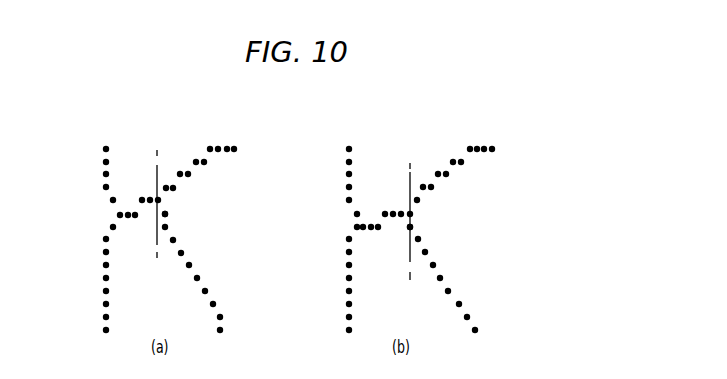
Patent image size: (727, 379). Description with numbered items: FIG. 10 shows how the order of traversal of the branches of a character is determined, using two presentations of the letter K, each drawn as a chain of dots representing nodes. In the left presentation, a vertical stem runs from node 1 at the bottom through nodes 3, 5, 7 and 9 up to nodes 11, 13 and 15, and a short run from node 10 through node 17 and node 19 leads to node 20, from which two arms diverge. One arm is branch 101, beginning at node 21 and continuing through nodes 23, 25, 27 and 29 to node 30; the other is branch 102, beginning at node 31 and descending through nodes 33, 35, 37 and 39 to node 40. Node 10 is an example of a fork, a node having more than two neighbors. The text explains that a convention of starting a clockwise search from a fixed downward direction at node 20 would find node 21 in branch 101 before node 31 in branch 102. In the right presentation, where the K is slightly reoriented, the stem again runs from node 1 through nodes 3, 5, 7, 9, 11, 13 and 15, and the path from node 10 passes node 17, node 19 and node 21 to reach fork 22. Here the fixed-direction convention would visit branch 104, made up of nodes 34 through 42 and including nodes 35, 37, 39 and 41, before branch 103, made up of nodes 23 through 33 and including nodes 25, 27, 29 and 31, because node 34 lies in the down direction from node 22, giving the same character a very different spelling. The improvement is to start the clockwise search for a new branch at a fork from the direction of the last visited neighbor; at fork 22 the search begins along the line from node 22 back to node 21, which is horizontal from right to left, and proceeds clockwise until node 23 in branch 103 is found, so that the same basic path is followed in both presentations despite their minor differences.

The node 1 is at (224, 332).
The node 3 is at (223, 307).
The node 5 is at (223, 280).
The node 7 is at (223, 253).
The node 9 is at (231, 228).
The node 10 is at (117, 214).
The node 11 is at (226, 202).
The node 13 is at (220, 176).
The node 15 is at (220, 150).
The node 17 is at (259, 223).
The node 19 is at (271, 199).
The node 20 is at (160, 199).
The node 21 is at (284, 193).
The node 22 is at (417, 219).
The node 23 is at (303, 182).
The node 25 is at (443, 187).
The node 27 is at (463, 174).
The node 29 is at (483, 161).
The node 30 is at (240, 153).
The node 31 is at (322, 178).
The node 33 is at (336, 191).
The node 34 is at (414, 231).
The node 35 is at (438, 244).
The node 37 is at (326, 277).
The node 39 is at (341, 303).
The node 40 is at (227, 336).
The node 41 is at (474, 315).
The node 42 is at (482, 332).
The branch 101 is at (177, 142).
The branch 102 is at (200, 239).
The branch 103 is at (448, 152).
The branch 104 is at (457, 267).